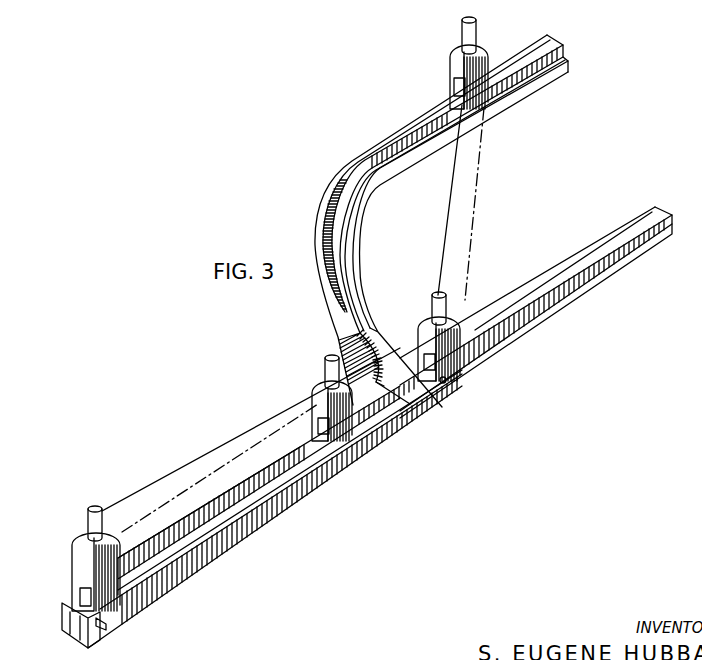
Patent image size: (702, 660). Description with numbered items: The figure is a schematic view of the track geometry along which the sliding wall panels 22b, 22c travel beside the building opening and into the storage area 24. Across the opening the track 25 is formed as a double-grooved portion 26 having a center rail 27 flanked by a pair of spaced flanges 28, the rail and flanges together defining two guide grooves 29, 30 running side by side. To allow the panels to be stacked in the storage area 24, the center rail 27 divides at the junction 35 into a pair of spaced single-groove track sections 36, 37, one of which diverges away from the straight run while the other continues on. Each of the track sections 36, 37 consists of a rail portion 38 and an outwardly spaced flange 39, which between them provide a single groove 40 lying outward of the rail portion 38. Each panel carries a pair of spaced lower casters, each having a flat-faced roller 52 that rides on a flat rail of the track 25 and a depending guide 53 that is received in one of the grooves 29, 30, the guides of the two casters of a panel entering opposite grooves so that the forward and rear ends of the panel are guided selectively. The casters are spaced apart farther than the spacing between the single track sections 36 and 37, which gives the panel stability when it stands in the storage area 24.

The wall panel 22b is at (216, 445).
The wall panel 22c is at (480, 166).
The storage area 24 is at (516, 224).
The track 25 is at (254, 535).
The double-grooved portion 26 is at (180, 533).
The center rail 27 is at (252, 498).
The flange 28 is at (200, 561).
The guide groove 29 is at (318, 463).
The guide groove 30 is at (304, 490).
The dividing point of rail 35 is at (392, 368).
The single-groove track section 36 is at (396, 128).
The single-groove track section 37 is at (646, 246).
The rail portion 38 is at (386, 160).
The flange 39 is at (350, 166).
The single groove 40 is at (325, 191).
The flat-faced roller 52 is at (454, 92).
The depending guide 53 is at (452, 383).